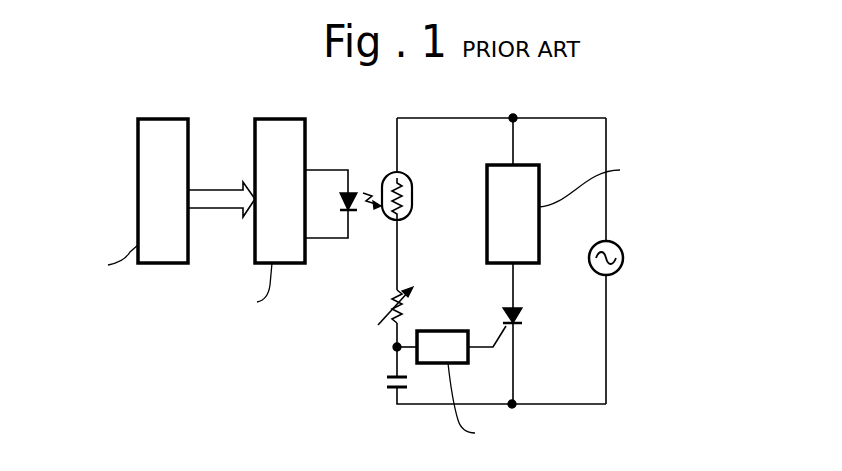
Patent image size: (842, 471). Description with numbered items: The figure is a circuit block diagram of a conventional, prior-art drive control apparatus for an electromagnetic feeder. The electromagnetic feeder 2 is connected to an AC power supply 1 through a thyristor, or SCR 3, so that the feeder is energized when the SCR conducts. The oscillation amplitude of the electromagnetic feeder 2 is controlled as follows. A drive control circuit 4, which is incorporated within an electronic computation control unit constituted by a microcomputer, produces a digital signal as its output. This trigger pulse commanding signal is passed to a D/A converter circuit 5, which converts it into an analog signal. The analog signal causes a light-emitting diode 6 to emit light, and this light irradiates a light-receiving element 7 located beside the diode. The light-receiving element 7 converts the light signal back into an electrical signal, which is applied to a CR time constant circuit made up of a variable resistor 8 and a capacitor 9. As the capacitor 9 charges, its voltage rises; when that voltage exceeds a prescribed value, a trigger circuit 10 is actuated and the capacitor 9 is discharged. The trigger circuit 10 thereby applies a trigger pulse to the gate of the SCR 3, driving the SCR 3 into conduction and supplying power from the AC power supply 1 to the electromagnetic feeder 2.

The AC power supply 1 is at (618, 258).
The electromagnetic feeder 2 is at (611, 203).
The thyristor (SCR) 3 is at (505, 326).
The drive control circuit 4 is at (112, 218).
The D/A converter circuit 5 is at (258, 217).
The light-emitting diode 6 is at (343, 204).
The light-receiving element 7 is at (406, 196).
The variable resistor 8 is at (403, 306).
The capacitor 9 is at (407, 384).
The trigger circuit 10 is at (482, 395).